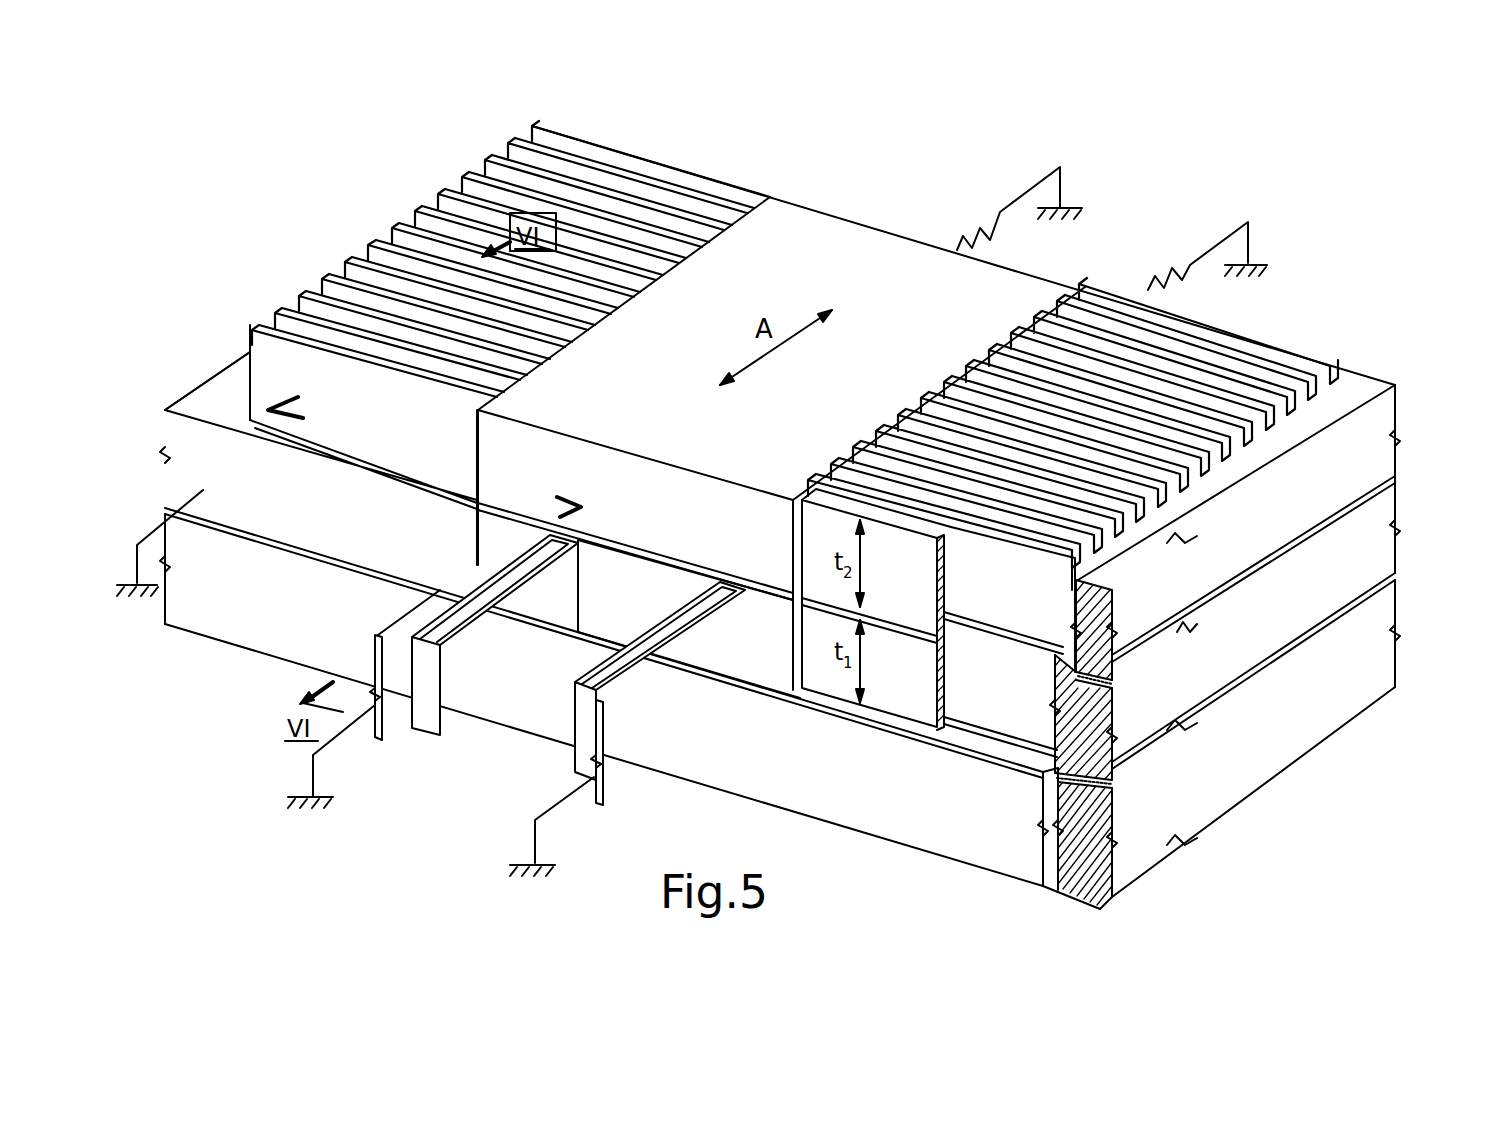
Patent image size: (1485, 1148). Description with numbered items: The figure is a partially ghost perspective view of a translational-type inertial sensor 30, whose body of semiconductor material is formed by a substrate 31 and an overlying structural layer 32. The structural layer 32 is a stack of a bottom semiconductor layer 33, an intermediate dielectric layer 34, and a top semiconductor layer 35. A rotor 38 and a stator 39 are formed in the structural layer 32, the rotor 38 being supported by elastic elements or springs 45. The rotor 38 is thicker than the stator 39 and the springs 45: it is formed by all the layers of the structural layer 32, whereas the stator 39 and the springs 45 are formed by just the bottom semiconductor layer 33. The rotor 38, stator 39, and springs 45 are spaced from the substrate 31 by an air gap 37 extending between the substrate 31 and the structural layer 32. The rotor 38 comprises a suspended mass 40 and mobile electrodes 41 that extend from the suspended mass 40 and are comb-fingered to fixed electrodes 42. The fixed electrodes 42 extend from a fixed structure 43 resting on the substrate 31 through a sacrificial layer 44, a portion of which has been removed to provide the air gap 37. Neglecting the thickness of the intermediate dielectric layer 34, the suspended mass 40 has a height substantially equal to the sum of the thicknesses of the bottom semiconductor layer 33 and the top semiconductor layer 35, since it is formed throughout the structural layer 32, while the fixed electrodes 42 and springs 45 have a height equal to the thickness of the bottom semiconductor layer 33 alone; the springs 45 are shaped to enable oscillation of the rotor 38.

The inertial sensor 30 is at (1297, 225).
The substrate 31 is at (1345, 689).
The structural layer 32 is at (1383, 460).
The bottom semiconductor layer 33 is at (1298, 634).
The intermediate dielectric layer 34 is at (1383, 493).
The top semiconductor layer 35 is at (1285, 516).
The air gap 37 is at (362, 577).
The rotor 38 is at (1016, 309).
The stator 39 is at (215, 388).
The suspended mass 40 is at (648, 414).
The mobile electrodes 41 is at (445, 458).
The fixed electrodes 42 is at (352, 528).
The fixed structure 43 is at (1367, 375).
The sacrificial layer 44 is at (1395, 577).
The springs 45 is at (483, 678).